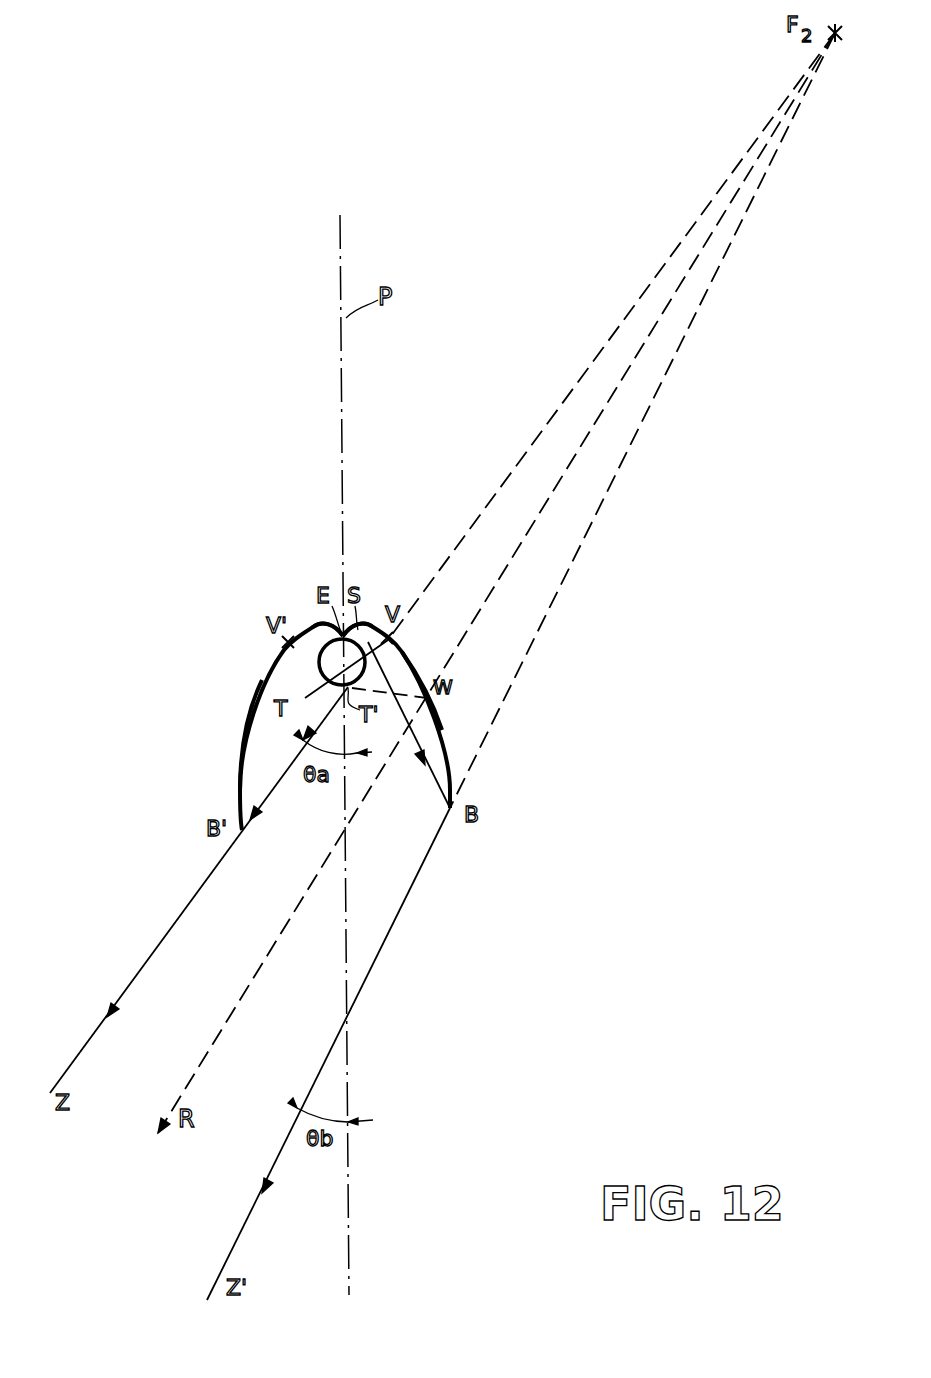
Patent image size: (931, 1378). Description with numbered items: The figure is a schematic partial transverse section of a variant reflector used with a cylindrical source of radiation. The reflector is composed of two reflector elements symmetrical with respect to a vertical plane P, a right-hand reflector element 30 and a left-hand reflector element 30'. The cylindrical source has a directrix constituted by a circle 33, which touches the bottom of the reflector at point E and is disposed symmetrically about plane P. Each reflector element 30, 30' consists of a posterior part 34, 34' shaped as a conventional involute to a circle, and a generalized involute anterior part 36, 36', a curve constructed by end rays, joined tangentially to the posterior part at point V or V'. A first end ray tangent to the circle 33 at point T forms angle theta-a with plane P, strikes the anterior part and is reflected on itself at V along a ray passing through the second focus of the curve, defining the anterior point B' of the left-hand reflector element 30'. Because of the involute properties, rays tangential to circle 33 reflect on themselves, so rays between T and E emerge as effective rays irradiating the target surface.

The right-hand reflector element 30 is at (439, 716).
The left-hand reflector element 30' is at (250, 727).
The circle 33 is at (319, 662).
The posterior part 34 is at (368, 595).
The posterior part 34' is at (313, 595).
The anterior part 36 is at (448, 691).
The anterior part 36' is at (217, 735).